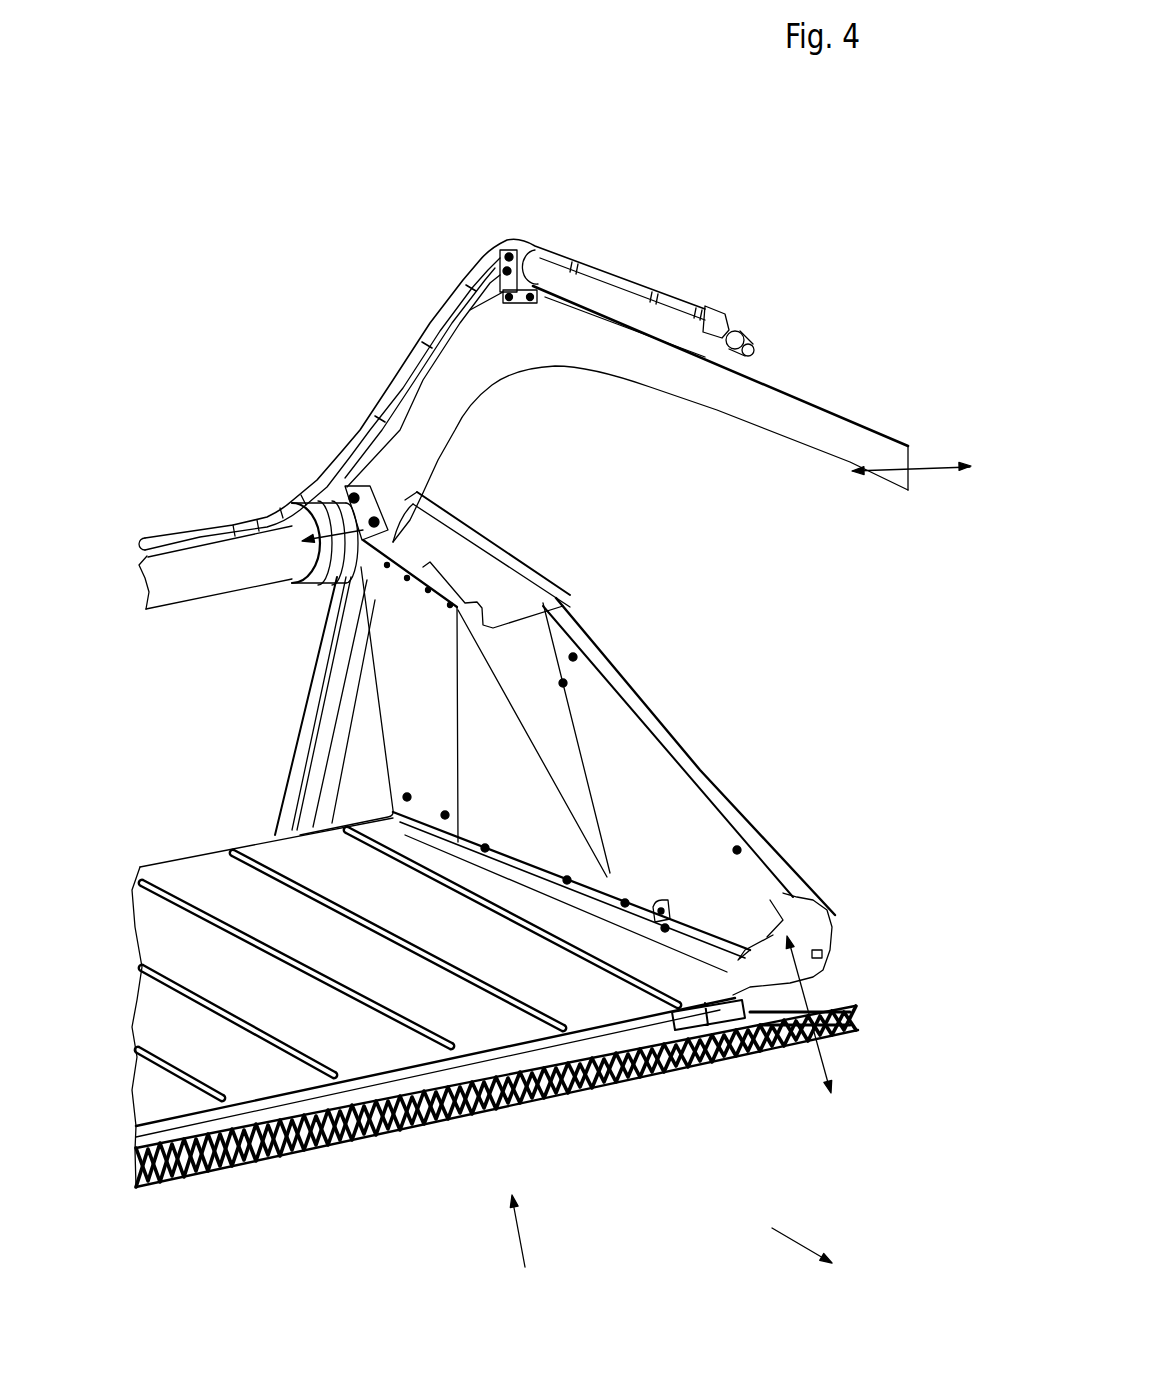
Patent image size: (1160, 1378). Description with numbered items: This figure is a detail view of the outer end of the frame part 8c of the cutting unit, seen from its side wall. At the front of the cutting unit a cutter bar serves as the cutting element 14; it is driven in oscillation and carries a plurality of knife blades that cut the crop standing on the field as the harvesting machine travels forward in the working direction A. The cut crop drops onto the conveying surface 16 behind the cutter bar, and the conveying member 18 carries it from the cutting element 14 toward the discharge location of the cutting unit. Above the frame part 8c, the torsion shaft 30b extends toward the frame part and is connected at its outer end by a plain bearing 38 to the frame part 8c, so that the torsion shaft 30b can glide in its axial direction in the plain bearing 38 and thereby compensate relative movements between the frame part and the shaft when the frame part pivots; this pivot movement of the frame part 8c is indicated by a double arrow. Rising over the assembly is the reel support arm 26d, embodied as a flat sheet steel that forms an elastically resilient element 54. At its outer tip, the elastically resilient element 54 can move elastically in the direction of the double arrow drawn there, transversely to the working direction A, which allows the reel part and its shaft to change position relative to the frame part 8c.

The frame part 8c is at (527, 1256).
The cutting element 14 is at (550, 1097).
The conveying surface 16 is at (283, 908).
The conveying member 18 is at (577, 1002).
The reel support arm 26d is at (543, 323).
The torsion shaft 30b is at (237, 552).
The plain bearing 38 is at (323, 497).
The elastically resilient element 54 is at (738, 410).
The working direction A is at (821, 1260).